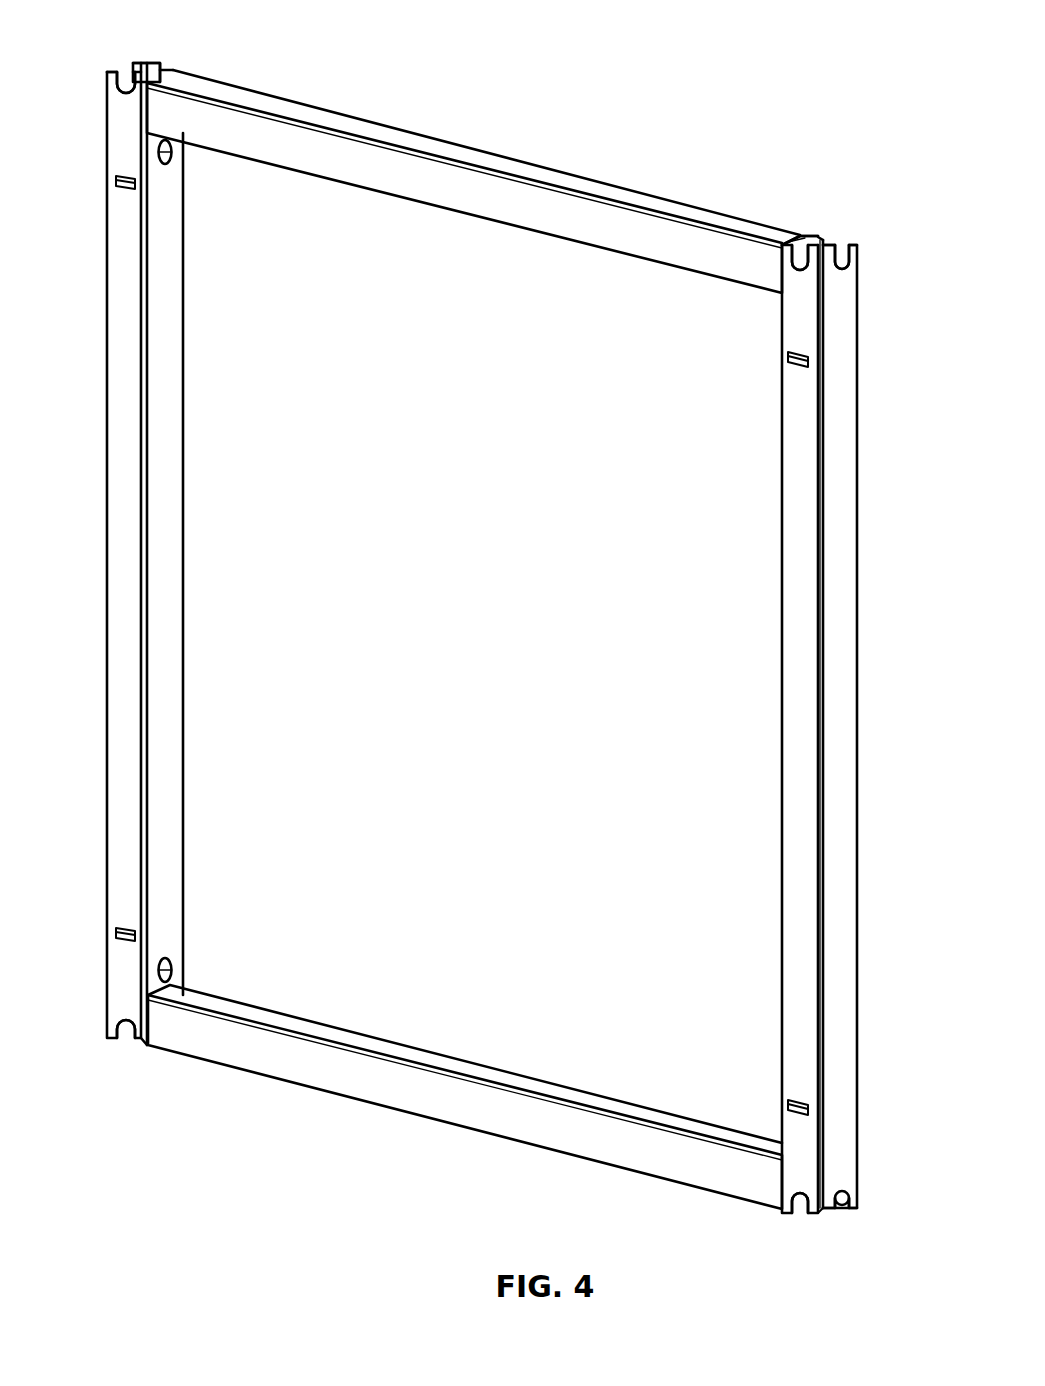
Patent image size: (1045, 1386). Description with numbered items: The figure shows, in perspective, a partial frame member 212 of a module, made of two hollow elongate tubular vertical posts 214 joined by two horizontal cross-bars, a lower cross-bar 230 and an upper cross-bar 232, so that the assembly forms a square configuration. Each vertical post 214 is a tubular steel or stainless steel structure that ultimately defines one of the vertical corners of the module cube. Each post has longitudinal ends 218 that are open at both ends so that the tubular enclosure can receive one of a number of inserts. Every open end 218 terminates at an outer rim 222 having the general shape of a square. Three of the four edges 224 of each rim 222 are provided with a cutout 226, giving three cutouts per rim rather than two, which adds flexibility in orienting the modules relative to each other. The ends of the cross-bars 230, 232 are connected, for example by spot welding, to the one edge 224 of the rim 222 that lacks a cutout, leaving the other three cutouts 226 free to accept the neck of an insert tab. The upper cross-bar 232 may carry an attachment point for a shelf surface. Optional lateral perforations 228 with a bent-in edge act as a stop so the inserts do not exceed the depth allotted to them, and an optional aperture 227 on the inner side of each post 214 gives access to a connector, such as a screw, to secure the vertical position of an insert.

The frame member 212 is at (488, 643).
The vertical post 214 is at (148, 597).
The longitudinal end 218 is at (172, 64).
The outer rim 222 is at (813, 1220).
The edge 224 is at (118, 73).
The cutout 226 is at (850, 262).
The aperture 227 is at (173, 967).
The lateral perforation 228 is at (796, 360).
The lower cross-bar 230 is at (408, 1085).
The upper cross-bar 232 is at (428, 193).